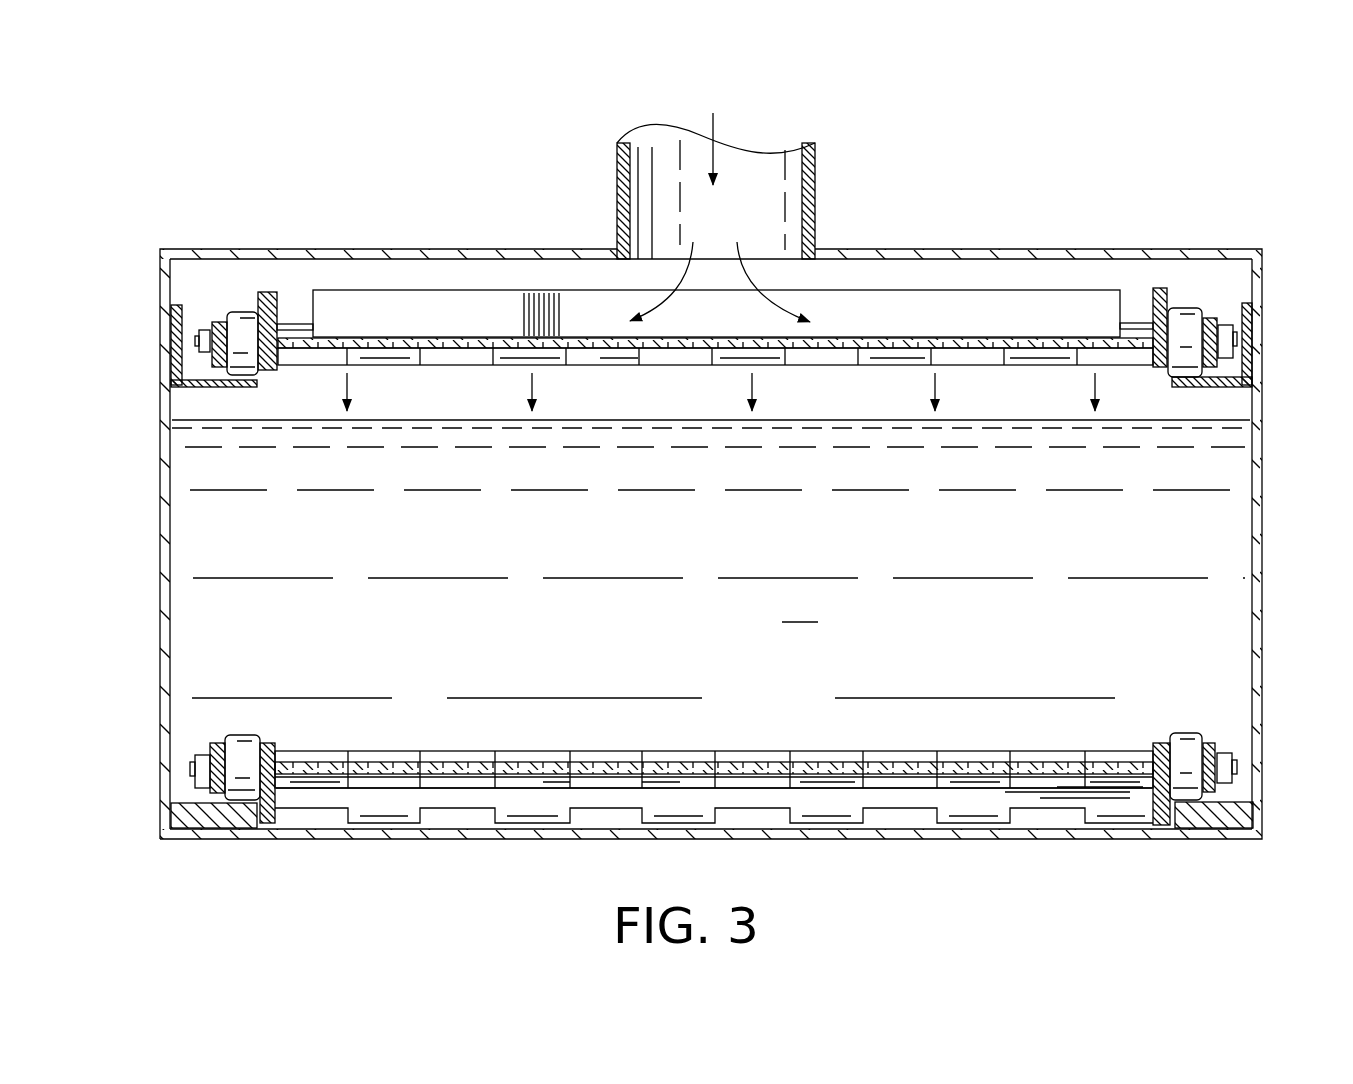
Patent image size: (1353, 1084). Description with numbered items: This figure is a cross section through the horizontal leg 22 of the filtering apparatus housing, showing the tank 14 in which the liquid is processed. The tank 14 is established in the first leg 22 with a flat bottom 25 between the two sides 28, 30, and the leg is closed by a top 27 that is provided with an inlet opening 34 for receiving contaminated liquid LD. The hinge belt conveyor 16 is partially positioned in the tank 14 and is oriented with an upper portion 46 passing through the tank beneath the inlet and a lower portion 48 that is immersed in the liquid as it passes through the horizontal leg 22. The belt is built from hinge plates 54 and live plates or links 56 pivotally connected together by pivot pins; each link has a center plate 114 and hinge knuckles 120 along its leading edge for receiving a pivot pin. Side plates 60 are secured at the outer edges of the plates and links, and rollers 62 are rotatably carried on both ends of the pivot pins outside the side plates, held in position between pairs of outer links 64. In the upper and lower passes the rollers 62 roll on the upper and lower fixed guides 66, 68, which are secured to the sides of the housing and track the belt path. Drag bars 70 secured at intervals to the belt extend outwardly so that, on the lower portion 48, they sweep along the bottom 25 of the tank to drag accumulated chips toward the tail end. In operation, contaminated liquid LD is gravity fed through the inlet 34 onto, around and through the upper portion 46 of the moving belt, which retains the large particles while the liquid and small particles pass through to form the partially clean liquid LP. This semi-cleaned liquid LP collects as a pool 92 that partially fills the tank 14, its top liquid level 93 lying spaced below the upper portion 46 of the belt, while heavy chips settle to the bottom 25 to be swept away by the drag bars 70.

The tank 14 is at (467, 392).
The hinge belt conveyor 16 is at (336, 280).
The first, generally horizontal leg 22 is at (1213, 245).
The flat bottom 25 is at (497, 838).
The top 27 is at (1008, 253).
The side 28 is at (165, 575).
The side 30 is at (1258, 540).
The inlet opening 34 is at (813, 172).
The upper portion 46 is at (1092, 275).
The lower portion 48 is at (853, 748).
The hinge plates 54 is at (973, 328).
The live plates or links 56 is at (603, 800).
The side plates 60 is at (270, 300).
The rollers 62 is at (233, 318).
The outer links 64 is at (207, 327).
The upper fixed guide 66 is at (205, 383).
The lower fixed guide 68 is at (215, 820).
The drag bars 70 is at (912, 313).
The pool 92 is at (1200, 525).
The top liquid level 93 is at (637, 418).
The center plate 114 is at (980, 795).
The hinge knuckles 120 is at (386, 820).
The contaminated liquid LD is at (713, 117).
The partially clean liquid LP is at (800, 608).